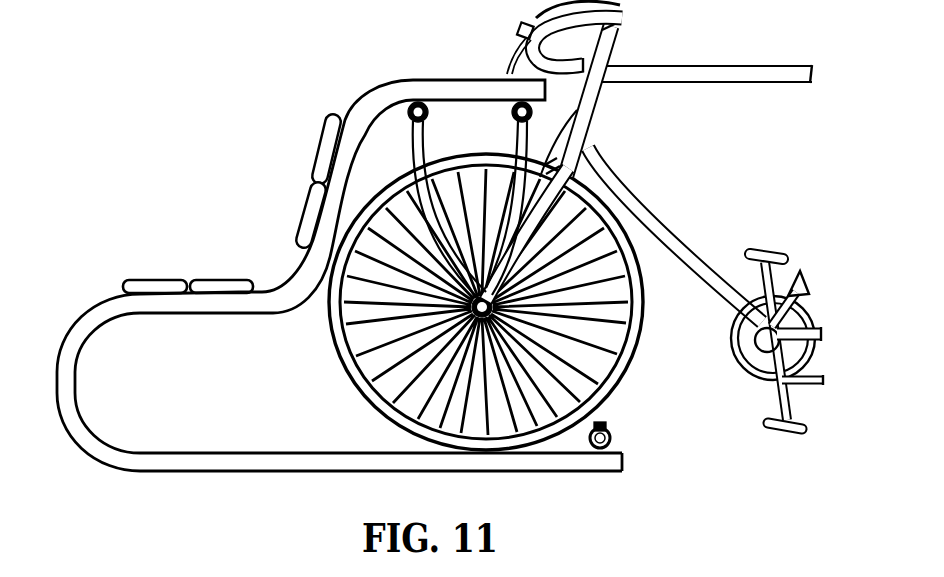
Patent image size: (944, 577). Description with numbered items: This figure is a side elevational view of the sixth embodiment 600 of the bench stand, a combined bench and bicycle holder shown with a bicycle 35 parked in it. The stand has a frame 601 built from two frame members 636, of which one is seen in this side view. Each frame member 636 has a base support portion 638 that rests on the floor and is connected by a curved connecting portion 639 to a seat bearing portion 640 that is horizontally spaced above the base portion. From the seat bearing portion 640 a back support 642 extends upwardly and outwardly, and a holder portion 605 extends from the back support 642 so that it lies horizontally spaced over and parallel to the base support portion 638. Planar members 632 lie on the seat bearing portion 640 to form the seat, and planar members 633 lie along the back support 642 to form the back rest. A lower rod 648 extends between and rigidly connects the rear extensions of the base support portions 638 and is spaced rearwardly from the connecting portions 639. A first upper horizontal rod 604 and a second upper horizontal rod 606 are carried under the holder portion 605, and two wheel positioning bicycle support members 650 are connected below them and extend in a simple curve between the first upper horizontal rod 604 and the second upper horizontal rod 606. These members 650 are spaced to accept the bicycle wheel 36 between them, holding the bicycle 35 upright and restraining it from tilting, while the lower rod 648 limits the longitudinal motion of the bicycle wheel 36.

The bicycle 35 is at (680, 66).
The bicycle wheel 36 is at (643, 313).
The sixth embodiment of the bench stand 600 is at (393, 273).
The frame 601 is at (573, 468).
The first upper horizontal rod 604 is at (410, 118).
The holder portion 605 is at (453, 78).
The second upper horizontal rod 606 is at (511, 112).
The planar members 632 is at (157, 278).
The planar members 633 is at (318, 147).
The frame members 636 is at (340, 450).
The base support portion 638 is at (623, 458).
The connecting portion 639 is at (88, 423).
The seat bearing portion 640 is at (190, 313).
The back support 642 is at (347, 204).
The lower rod 648 is at (613, 428).
The wheel positioning bicycle support members 650 is at (428, 158).